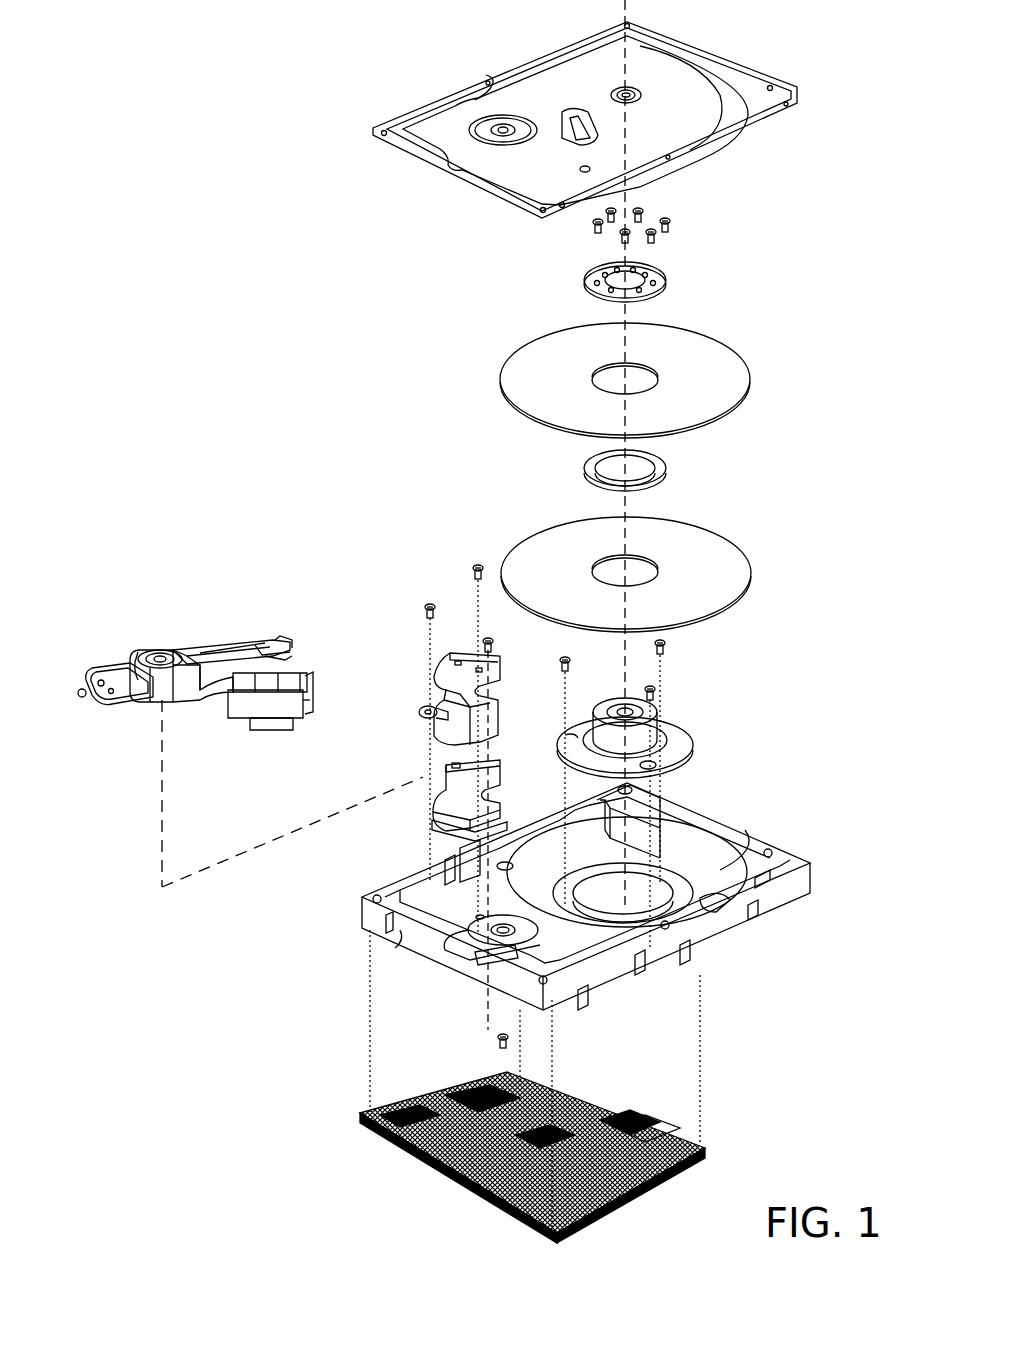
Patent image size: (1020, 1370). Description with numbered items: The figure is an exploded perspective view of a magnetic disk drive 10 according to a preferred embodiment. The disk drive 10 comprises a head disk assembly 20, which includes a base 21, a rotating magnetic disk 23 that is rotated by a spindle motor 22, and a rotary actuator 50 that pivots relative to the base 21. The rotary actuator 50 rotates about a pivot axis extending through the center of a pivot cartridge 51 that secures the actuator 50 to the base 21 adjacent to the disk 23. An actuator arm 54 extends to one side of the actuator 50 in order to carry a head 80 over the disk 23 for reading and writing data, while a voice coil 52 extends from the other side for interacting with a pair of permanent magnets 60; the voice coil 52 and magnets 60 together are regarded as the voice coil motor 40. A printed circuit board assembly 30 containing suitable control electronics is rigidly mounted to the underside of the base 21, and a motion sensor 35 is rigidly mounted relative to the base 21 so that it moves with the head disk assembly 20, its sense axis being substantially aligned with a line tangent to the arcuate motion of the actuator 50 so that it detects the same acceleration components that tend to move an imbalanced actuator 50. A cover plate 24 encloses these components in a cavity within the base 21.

The magnetic disk drive 10 is at (235, 130).
The head disk assembly 20 is at (835, 992).
The base 21 is at (795, 857).
The spindle motor 22 is at (680, 731).
The magnetic disk 23 is at (735, 351).
The cover plate 24 is at (762, 72).
The printed circuit board assembly 30 is at (595, 1210).
The motion sensor 35 is at (640, 1140).
The voice coil motor 40 is at (490, 562).
The rotary actuator 50 is at (155, 612).
The pivot cartridge 51 is at (153, 650).
The voice coil 52 is at (80, 672).
The actuator arm 54 is at (183, 650).
The permanent magnets 60 is at (440, 790).
The head 80 is at (273, 648).